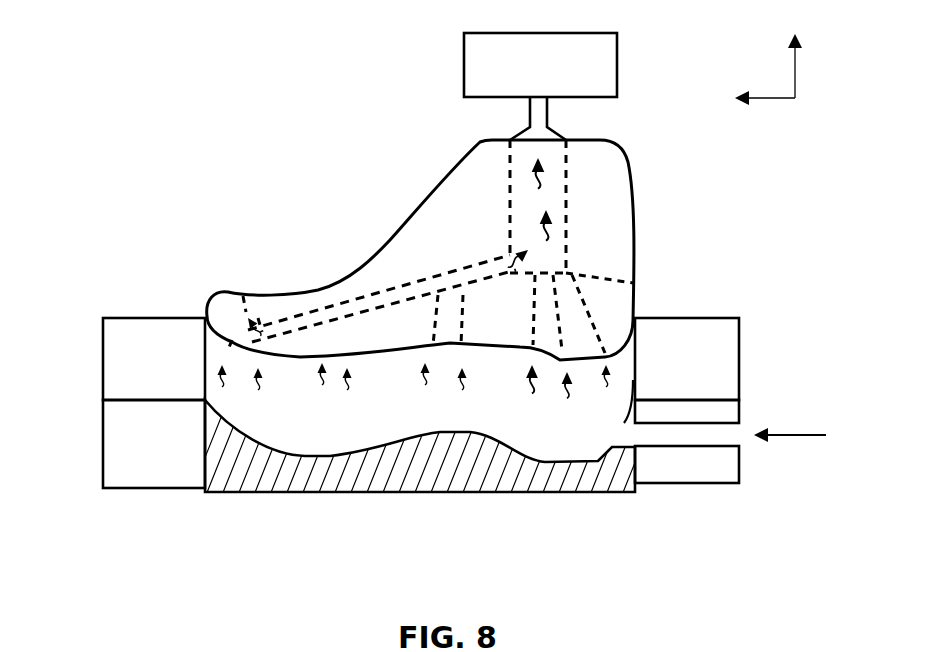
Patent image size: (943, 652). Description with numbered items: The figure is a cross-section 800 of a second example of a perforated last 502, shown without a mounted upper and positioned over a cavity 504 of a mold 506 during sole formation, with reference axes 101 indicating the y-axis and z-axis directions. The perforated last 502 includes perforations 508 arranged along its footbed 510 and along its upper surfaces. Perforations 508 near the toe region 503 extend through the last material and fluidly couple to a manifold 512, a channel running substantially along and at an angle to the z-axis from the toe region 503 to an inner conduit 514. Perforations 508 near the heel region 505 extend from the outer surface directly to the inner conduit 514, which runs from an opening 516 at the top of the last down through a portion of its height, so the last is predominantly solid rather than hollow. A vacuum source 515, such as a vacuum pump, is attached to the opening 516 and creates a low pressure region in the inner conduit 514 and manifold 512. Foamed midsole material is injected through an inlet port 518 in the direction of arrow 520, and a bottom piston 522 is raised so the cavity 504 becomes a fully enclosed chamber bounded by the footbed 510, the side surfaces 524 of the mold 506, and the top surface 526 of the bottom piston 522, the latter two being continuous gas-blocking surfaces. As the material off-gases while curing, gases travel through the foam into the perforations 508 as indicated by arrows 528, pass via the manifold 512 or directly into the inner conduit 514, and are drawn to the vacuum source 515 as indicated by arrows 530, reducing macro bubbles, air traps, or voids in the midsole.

The cross-section 800 is at (176, 82).
The coordinate axes 101 is at (770, 50).
The perforated last 502 is at (414, 194).
The toe region 503 is at (200, 290).
The cavity 504 is at (438, 409).
The heel region 505 is at (650, 308).
The mold 506 is at (92, 338).
The perforations 508 is at (245, 298).
The footbed 510 is at (322, 360).
The manifold 512 is at (445, 282).
The inner conduit 514 is at (560, 178).
The vacuum source 515 is at (557, 33).
The opening 516 is at (557, 138).
The inlet port 518 is at (730, 432).
The arrow 520 is at (780, 437).
The bottom piston 522 is at (385, 493).
The side surfaces 524 is at (203, 378).
The top surface 526 is at (372, 447).
The arrows 528 is at (256, 380).
The arrows 530 is at (540, 180).